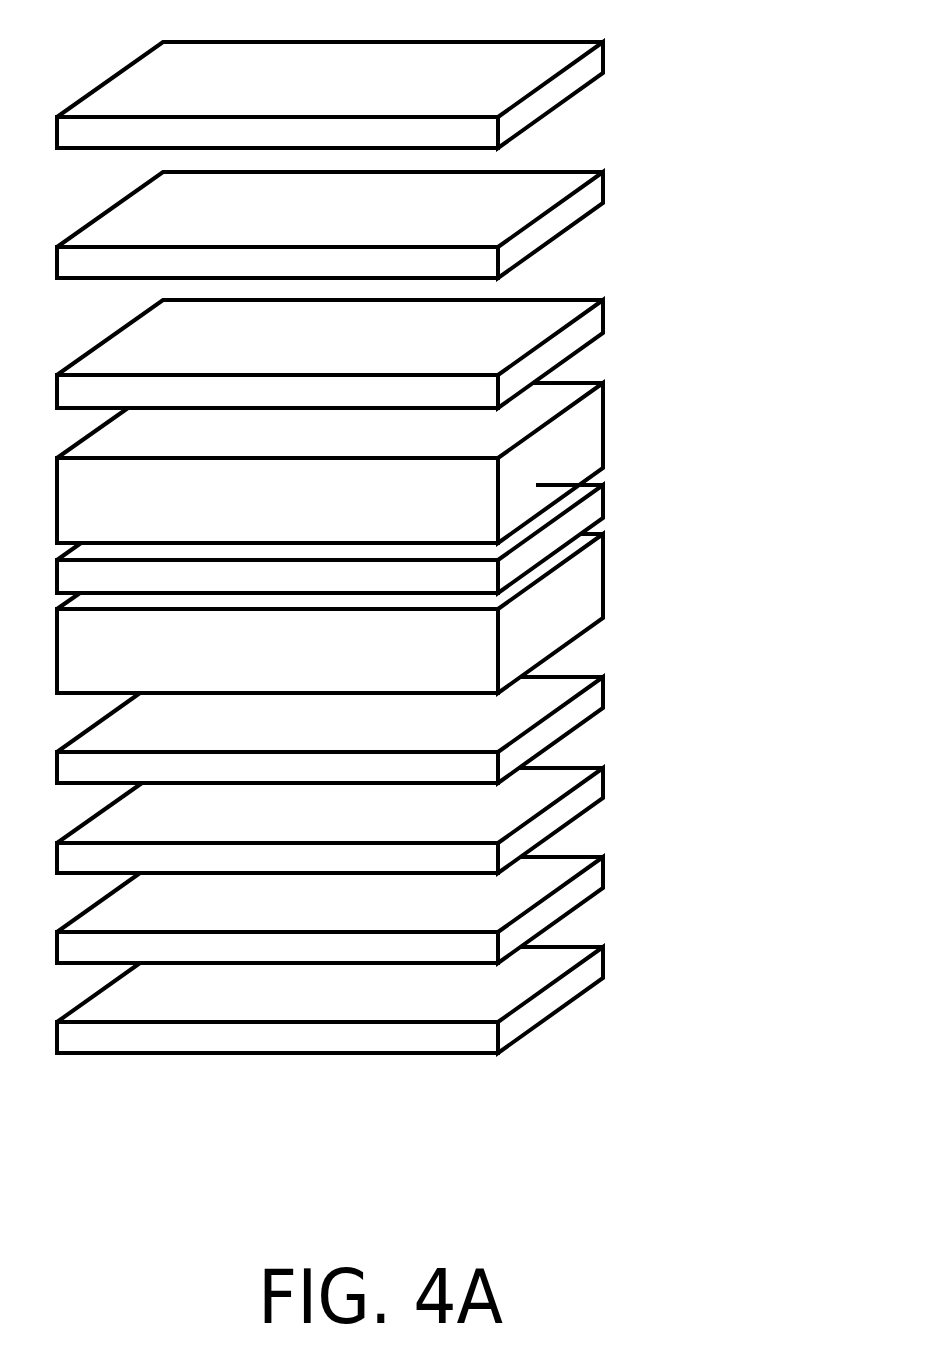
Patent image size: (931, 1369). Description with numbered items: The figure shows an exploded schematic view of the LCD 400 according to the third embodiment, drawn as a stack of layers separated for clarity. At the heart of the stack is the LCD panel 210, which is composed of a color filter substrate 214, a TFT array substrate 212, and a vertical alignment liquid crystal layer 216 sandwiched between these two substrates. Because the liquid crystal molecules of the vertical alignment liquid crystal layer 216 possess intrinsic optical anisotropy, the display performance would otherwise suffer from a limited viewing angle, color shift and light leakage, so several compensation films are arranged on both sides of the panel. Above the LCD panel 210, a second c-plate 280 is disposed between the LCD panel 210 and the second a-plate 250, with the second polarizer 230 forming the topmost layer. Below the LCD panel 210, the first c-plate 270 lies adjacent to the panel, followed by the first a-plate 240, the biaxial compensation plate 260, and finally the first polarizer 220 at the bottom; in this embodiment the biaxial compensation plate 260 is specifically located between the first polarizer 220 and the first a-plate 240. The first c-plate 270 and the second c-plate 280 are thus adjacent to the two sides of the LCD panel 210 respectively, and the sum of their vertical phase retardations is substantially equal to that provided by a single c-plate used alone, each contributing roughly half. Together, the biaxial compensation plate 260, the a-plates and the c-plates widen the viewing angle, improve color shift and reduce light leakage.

The LCD 400 is at (757, 1110).
The second polarizer 230 is at (588, 68).
The second a-plate 250 is at (588, 198).
The second c-plate 280 is at (588, 328).
The LCD panel 210 is at (451, 527).
The color filter substrate 214 is at (588, 432).
The vertical alignment liquid crystal layer 216 is at (588, 513).
The TFT array substrate 212 is at (405, 604).
The first c-plate 270 is at (588, 703).
The first a-plate 240 is at (588, 793).
The biaxial compensation plate 260 is at (588, 883).
The first polarizer 220 is at (588, 973).